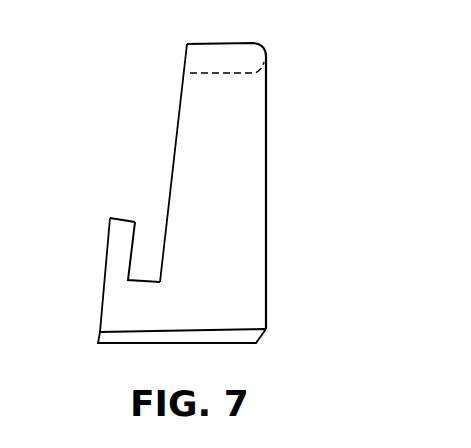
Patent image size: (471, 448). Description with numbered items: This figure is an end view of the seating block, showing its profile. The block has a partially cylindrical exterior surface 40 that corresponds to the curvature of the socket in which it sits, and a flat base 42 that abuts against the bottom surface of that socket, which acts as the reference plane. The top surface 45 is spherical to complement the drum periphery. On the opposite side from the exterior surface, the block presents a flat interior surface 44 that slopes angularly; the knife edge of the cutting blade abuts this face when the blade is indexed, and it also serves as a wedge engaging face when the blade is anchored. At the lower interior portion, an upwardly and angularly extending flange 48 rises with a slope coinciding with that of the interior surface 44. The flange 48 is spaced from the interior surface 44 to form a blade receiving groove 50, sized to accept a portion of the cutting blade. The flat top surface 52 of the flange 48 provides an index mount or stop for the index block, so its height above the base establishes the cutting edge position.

The partially cylindrical exterior surface 40 is at (266, 125).
The base 42 is at (132, 340).
The flat interior surface 44 is at (179, 107).
The top surface 45 is at (238, 55).
The flange 48 is at (108, 255).
The blade receiving groove 50 is at (146, 283).
The top surface of flange 52 is at (122, 218).